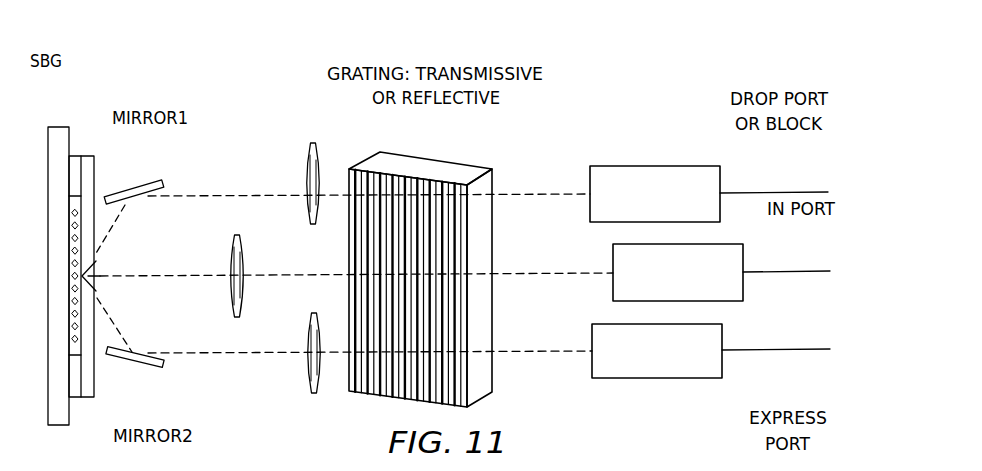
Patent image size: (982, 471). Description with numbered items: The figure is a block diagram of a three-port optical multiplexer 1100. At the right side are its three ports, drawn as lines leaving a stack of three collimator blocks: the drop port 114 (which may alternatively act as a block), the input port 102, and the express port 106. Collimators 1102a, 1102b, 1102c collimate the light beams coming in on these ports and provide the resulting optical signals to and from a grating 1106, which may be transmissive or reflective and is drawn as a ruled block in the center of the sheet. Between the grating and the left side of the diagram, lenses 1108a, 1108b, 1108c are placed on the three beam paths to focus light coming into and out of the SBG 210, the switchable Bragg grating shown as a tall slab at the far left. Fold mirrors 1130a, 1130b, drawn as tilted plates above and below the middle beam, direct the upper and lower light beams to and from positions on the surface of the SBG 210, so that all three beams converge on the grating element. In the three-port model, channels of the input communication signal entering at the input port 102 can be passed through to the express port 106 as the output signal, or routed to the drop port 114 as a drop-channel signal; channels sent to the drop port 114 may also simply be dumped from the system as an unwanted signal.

The three-port optical multiplexer 1100 is at (684, 87).
The SBG 210 is at (57, 127).
The fold mirror 1130a is at (143, 184).
The fold mirror 1130b is at (143, 365).
The lens 1108a is at (305, 176).
The lens 1108b is at (229, 262).
The lens 1108c is at (307, 371).
The grating 1106 is at (423, 160).
The collimator 1102a is at (616, 165).
The collimator 1102b is at (613, 262).
The collimator 1102c is at (618, 379).
The drop port 114 is at (768, 191).
The input port 102 is at (780, 271).
The express port 106 is at (777, 351).